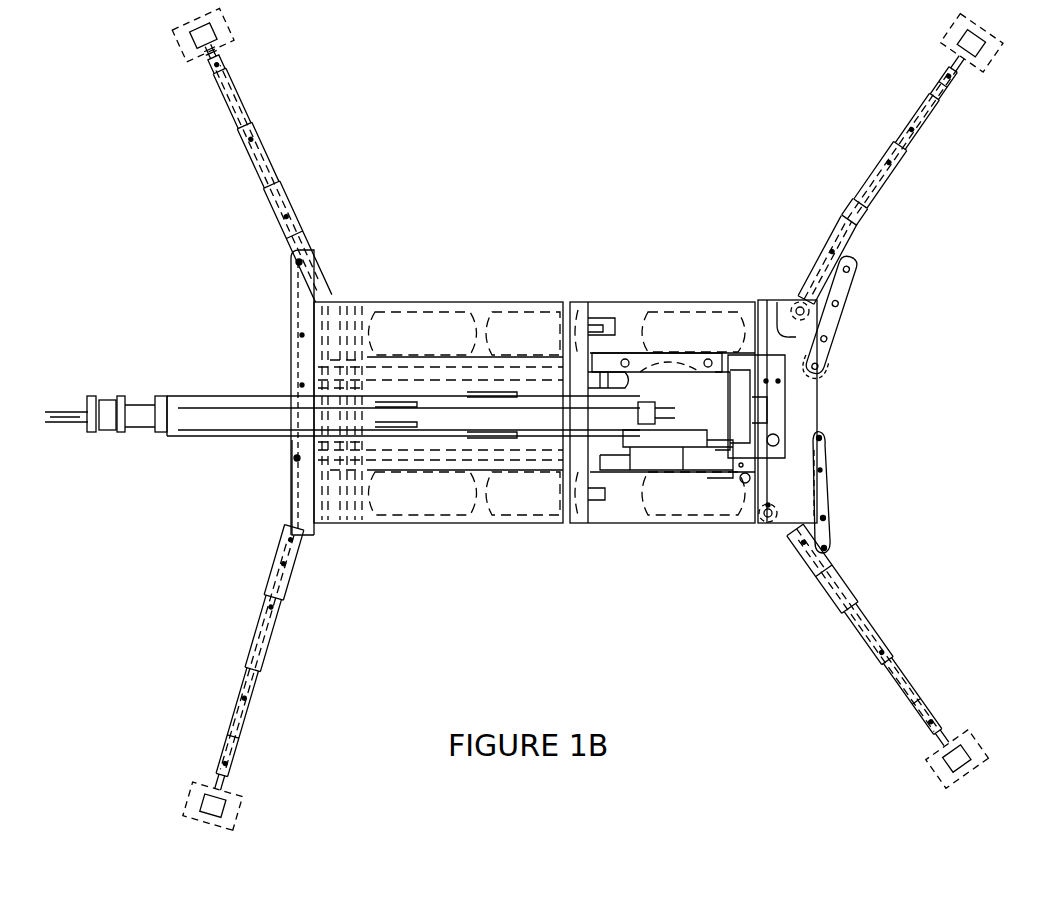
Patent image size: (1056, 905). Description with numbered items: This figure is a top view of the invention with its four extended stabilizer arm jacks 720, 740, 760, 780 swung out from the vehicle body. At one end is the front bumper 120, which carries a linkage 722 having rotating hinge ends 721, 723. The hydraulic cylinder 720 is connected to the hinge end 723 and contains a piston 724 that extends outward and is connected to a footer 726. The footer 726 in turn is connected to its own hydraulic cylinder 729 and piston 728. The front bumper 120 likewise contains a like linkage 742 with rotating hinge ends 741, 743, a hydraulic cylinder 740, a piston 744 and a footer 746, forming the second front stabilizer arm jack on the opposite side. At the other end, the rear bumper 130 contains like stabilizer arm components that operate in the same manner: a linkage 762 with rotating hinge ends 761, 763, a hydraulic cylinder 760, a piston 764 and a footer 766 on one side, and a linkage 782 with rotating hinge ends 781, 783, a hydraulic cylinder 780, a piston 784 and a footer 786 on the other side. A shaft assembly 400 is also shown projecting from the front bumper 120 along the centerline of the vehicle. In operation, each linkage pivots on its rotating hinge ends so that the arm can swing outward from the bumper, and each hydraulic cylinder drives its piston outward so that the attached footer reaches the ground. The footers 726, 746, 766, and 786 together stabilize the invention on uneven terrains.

The front bumper 120 is at (561, 388).
The rear bumper 130 is at (796, 305).
The drive shaft assembly 400 is at (185, 434).
The hydraulic cylinder 720 is at (284, 158).
The rotating hinge end 721 is at (292, 386).
The linkage 722 is at (311, 383).
The rotating hinge end 723 is at (304, 262).
The piston 724 is at (235, 106).
The footer 726 is at (228, 52).
The piston 728 is at (210, 51).
The hydraulic cylinder 729 is at (213, 58).
The hydraulic cylinder 740 is at (257, 642).
The rotating hinge end 741 is at (294, 458).
The linkage 742 is at (284, 563).
The rotating hinge end 743 is at (263, 633).
The piston 744 is at (237, 722).
The footer 746 is at (213, 806).
The hydraulic cylinder 760 is at (927, 159).
The rotating hinge end 761 is at (813, 368).
The linkage 762 is at (838, 318).
The rotating hinge end 763 is at (884, 323).
The piston 764 is at (926, 107).
The footer 766 is at (985, 72).
The hydraulic cylinder 780 is at (907, 651).
The rotating hinge end 781 is at (822, 436).
The linkage 782 is at (886, 503).
The rotating hinge end 783 is at (828, 550).
The piston 784 is at (912, 696).
The footer 786 is at (957, 759).